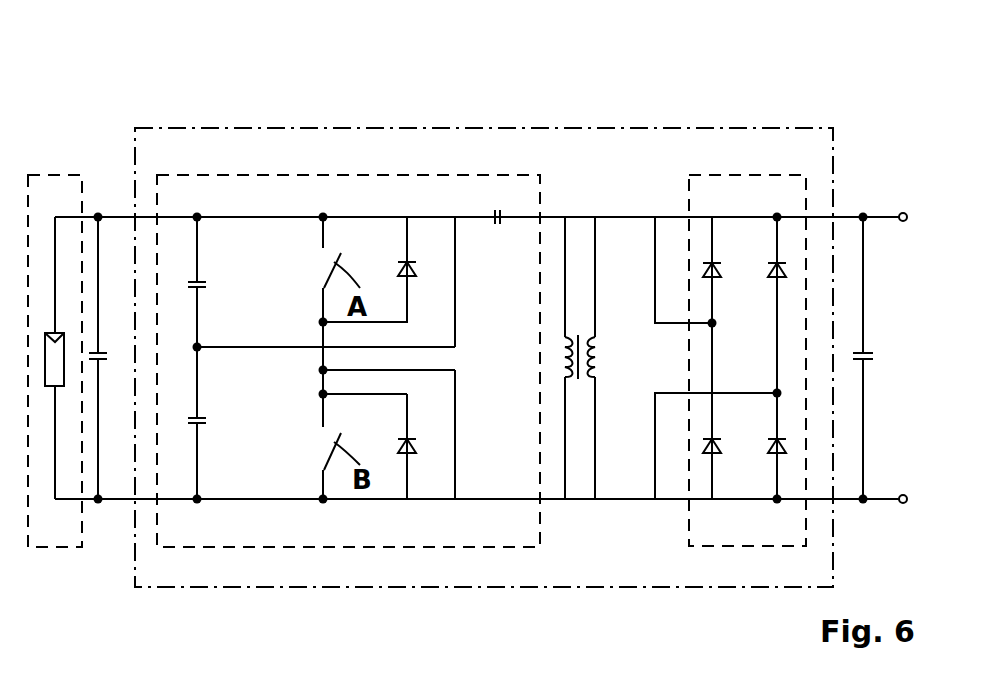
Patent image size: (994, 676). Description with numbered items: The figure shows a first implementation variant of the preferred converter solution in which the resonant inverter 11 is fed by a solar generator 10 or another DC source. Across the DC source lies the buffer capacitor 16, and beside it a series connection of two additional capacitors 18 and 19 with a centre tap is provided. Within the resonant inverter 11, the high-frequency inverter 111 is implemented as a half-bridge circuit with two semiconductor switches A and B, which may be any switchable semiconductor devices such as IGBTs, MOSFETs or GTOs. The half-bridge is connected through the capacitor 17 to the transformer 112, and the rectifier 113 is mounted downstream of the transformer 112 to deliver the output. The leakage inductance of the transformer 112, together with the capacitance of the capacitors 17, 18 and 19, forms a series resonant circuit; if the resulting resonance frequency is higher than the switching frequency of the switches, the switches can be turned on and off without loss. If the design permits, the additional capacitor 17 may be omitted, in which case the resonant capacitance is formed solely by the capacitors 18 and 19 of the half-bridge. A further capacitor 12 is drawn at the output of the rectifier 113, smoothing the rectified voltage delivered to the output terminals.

The solar generator 10 is at (55, 175).
The buffer capacitor 16 is at (110, 320).
The resonant inverter 11 is at (375, 128).
The high-frequency inverter 111 is at (258, 175).
The additional capacitor 18 is at (200, 282).
The additional capacitor 19 is at (200, 418).
The capacitor 17 is at (500, 213).
The transformer 112 is at (582, 218).
The rectifier 113 is at (724, 175).
The output capacitor 12 is at (876, 336).